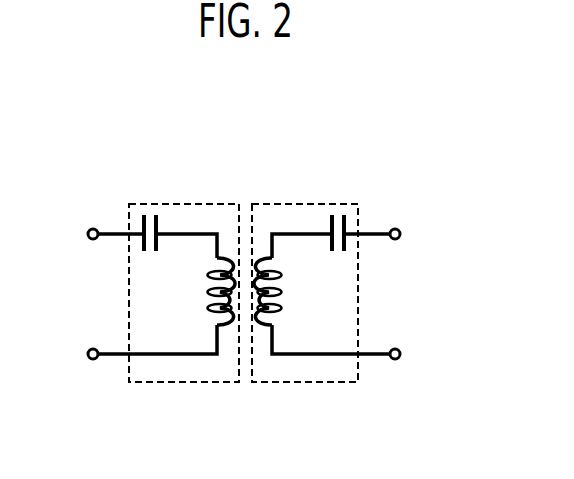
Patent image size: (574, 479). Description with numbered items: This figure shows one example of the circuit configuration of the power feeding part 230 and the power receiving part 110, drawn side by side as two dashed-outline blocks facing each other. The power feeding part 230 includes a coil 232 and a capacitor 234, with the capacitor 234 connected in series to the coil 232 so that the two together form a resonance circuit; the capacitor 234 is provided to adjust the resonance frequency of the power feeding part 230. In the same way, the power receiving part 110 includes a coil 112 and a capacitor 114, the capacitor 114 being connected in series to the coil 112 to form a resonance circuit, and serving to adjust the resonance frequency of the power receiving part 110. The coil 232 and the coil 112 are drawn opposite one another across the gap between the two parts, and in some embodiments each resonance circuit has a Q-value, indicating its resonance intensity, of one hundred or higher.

The power feeding part 230 is at (208, 204).
The capacitor 234 is at (159, 227).
The coil 232 is at (209, 311).
The power receiving part 110 is at (278, 204).
The capacitor 114 is at (329, 227).
The coil 112 is at (280, 311).